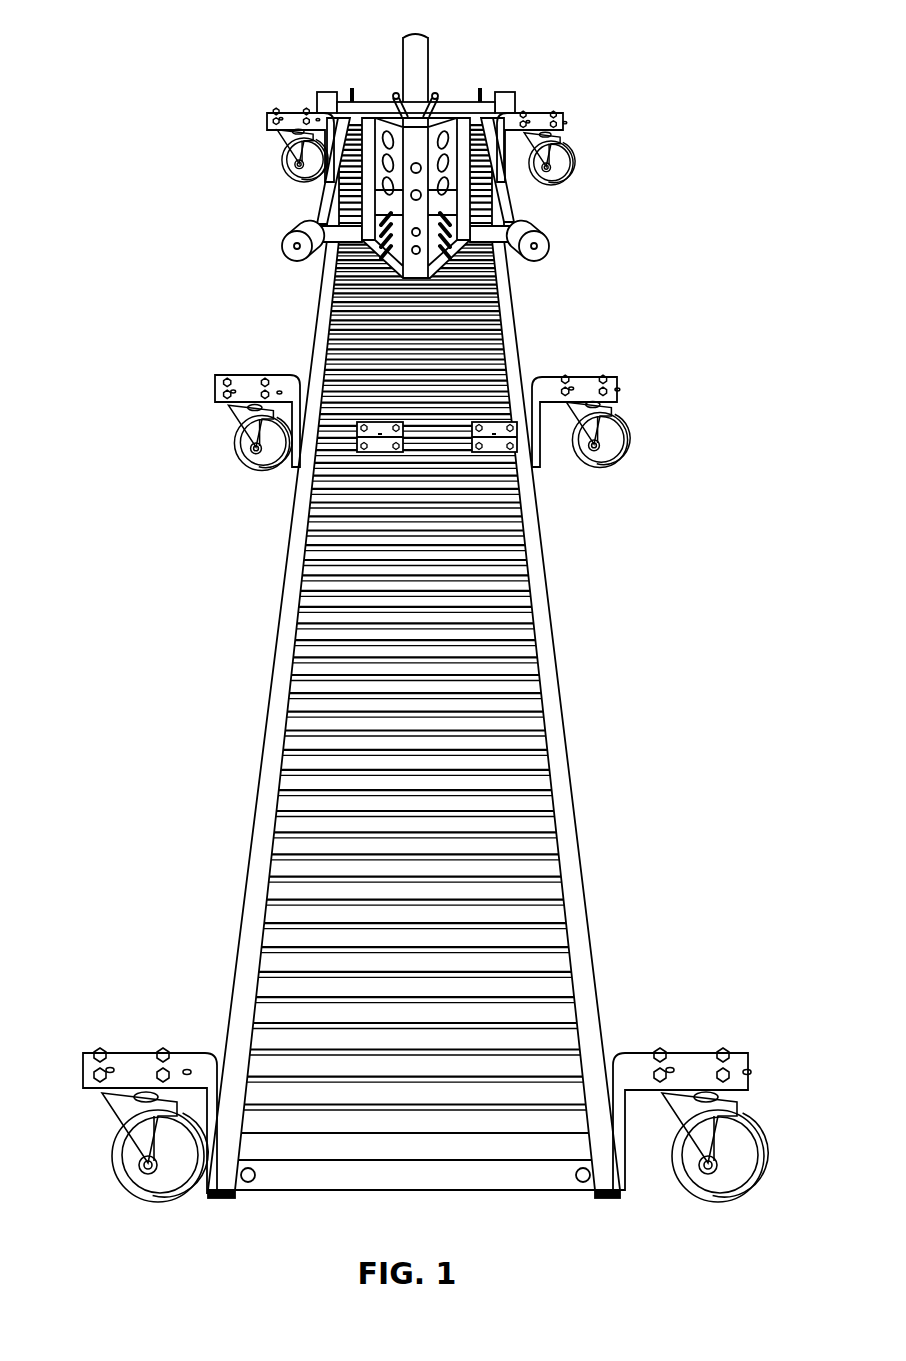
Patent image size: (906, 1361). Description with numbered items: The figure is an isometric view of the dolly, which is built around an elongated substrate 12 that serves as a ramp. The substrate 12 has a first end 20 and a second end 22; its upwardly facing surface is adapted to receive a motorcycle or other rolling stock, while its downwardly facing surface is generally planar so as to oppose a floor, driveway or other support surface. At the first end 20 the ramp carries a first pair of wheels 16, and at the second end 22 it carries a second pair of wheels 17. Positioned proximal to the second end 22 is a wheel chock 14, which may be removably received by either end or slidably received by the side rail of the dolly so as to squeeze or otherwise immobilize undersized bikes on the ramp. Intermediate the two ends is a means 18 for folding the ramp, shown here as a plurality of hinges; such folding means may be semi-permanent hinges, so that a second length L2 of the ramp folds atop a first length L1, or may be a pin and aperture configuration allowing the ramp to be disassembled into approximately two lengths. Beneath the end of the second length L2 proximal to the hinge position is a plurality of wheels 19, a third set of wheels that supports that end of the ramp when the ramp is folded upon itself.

The elongated substrate 12 is at (272, 690).
The wheel chock 14 is at (508, 195).
The first pair of wheels 16 is at (125, 1058).
The second pair of wheels 17 is at (320, 217).
The means for folding the ramp 18 is at (517, 452).
The plurality of wheels 19 is at (598, 428).
The first end 20 is at (540, 1140).
The second end 22 is at (322, 240).
The first length L1 is at (327, 248).
The second length L2 is at (223, 1106).